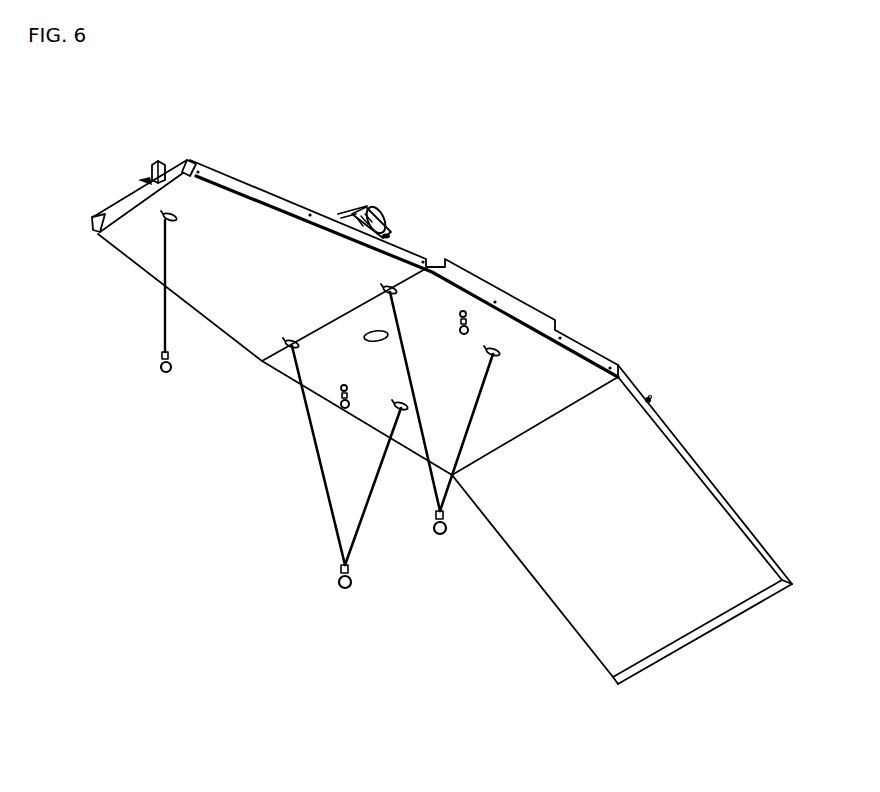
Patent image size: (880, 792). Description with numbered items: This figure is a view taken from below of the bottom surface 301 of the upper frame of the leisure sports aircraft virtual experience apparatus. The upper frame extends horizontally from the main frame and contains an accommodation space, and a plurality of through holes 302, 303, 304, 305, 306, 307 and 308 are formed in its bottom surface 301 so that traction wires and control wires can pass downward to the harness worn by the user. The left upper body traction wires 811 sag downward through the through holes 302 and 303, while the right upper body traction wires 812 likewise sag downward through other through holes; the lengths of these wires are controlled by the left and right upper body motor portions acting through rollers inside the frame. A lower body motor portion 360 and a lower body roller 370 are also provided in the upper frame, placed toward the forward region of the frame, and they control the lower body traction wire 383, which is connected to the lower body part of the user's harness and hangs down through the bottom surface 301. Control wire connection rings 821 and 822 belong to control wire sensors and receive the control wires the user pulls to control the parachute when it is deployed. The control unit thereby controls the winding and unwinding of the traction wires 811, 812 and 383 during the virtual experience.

The bottom surface 301 is at (673, 487).
The through hole 302 is at (498, 356).
The through hole 303 is at (394, 293).
The through hole 304 is at (402, 410).
The through hole 305 is at (290, 348).
The through hole 306 is at (467, 310).
The through hole 307 is at (342, 392).
The through hole 308 is at (172, 224).
The lower body motor portion 360 is at (386, 198).
The lower body roller 370 is at (153, 162).
The lower body traction wire 383 is at (162, 332).
The left upper body traction wires 811 is at (331, 508).
The right upper body traction wires 812 is at (450, 478).
The control wire connection ring 821 is at (343, 408).
The control wire connection ring 822 is at (468, 333).